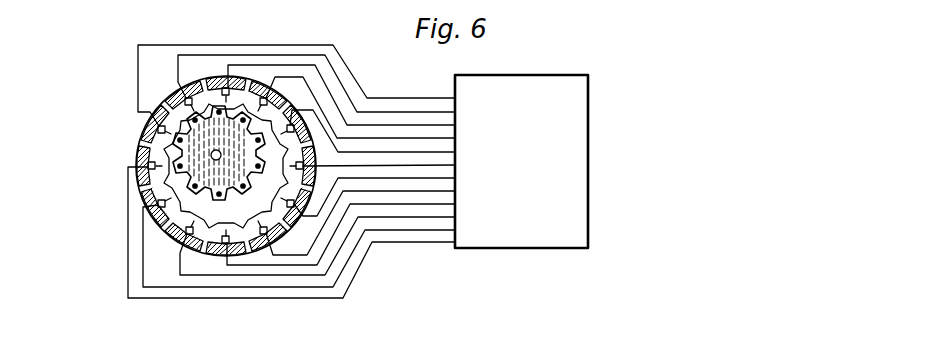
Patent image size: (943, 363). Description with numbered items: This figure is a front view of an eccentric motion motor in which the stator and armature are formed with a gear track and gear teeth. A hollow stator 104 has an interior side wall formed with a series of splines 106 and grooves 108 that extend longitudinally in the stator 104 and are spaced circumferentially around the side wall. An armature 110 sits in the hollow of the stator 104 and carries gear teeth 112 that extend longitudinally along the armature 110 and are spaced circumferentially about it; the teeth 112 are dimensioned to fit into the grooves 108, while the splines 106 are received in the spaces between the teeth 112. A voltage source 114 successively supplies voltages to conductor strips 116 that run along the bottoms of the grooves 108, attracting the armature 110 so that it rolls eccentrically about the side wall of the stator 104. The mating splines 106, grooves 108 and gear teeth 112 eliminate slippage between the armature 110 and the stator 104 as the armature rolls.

The hollow stator 104 is at (145, 160).
The splines 106 is at (300, 213).
The grooves 108 is at (226, 245).
The armature 110 is at (170, 148).
The gear teeth 112 is at (150, 230).
The voltage source 114 is at (588, 146).
The conductor strips 116 is at (155, 122).